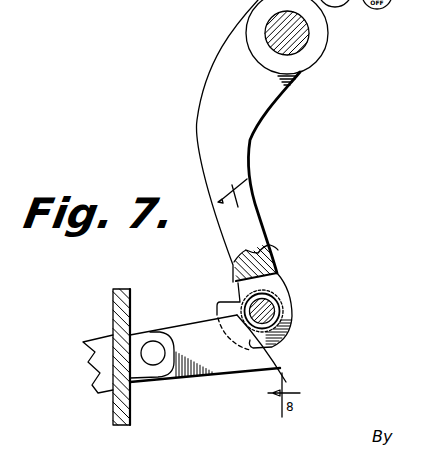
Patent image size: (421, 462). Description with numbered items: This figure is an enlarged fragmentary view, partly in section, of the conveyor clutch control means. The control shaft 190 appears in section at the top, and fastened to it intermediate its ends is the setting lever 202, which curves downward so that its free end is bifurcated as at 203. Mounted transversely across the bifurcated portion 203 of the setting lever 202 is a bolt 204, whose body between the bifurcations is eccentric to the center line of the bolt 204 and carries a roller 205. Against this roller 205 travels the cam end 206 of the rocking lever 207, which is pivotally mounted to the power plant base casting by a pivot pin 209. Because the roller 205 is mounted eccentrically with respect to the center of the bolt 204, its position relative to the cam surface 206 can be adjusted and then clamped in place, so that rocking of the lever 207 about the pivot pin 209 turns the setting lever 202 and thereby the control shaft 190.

The control shaft 190 is at (304, 47).
The setting lever 202 is at (250, 118).
The bifurcated portion 203 is at (292, 310).
The bolt 204 is at (279, 304).
The roller 205 is at (265, 306).
The cam end 206 is at (274, 352).
The rocking lever 207 is at (215, 376).
The pivot pin 209 is at (153, 353).